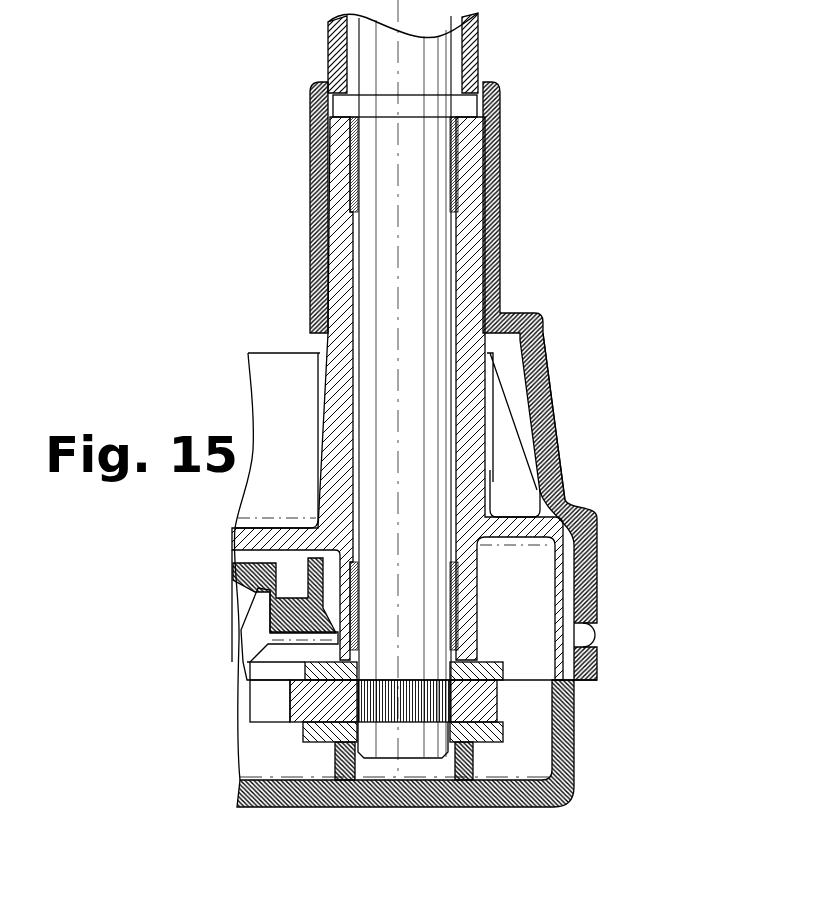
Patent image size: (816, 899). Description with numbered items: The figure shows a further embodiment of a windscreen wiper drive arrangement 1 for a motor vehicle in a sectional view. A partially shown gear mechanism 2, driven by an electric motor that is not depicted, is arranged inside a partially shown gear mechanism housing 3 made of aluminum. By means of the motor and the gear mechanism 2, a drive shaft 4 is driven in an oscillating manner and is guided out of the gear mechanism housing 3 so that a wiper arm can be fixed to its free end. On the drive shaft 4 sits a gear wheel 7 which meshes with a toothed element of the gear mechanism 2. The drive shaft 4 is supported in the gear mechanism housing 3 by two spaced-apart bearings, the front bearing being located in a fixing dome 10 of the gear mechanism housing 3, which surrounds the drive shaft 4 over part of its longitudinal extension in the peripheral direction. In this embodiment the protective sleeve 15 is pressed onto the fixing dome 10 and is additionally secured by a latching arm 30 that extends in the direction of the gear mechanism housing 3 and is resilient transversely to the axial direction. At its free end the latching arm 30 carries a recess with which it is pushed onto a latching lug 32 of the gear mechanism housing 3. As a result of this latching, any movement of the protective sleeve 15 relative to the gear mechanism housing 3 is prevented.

The windscreen wiper drive arrangement 1 is at (663, 186).
The gear mechanism 2 is at (271, 707).
The gear mechanism housing 3 is at (563, 489).
The drive shaft 4 is at (432, 68).
The gear wheel 7 is at (320, 707).
The fixing dome 10 is at (472, 261).
The protective sleeve 15 is at (502, 193).
The latching arm 30 is at (550, 397).
The latching lug 32 is at (587, 643).